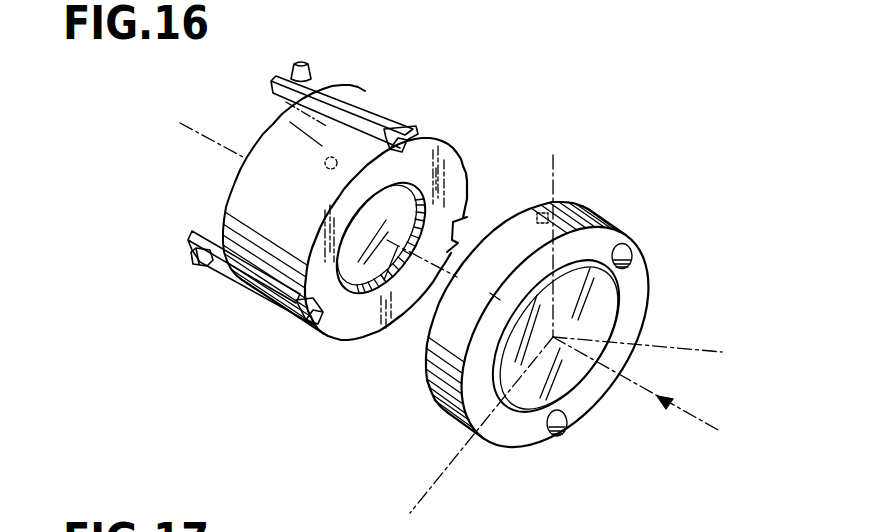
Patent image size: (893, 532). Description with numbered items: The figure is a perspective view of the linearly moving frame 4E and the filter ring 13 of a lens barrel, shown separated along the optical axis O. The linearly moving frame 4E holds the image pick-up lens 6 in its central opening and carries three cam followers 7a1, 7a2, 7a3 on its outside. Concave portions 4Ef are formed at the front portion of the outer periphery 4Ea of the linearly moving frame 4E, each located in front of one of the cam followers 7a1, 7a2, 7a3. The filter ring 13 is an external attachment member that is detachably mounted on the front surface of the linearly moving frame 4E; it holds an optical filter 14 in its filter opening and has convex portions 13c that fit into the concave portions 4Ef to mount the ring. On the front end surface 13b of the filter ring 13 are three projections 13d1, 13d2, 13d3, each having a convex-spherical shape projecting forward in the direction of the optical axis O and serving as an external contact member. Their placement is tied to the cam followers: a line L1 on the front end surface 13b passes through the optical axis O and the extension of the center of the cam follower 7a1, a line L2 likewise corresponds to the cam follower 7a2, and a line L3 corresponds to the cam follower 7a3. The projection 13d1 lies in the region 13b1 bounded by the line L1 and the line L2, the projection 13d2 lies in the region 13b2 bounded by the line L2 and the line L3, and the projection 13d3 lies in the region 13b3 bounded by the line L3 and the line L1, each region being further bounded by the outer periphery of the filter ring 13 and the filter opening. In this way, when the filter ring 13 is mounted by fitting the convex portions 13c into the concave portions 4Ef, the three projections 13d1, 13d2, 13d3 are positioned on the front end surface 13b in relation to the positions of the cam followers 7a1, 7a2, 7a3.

The linearly moving frame 4E is at (263, 184).
The image pick-up lens 6 is at (357, 294).
The outer periphery 4Ea is at (368, 108).
The concave portions 4Ef is at (404, 134).
The cam follower 7a1 is at (306, 60).
The cam follower 7a2 is at (338, 156).
The cam follower 7a3 is at (197, 266).
The filter ring 13 is at (600, 208).
The front end surface 13b is at (497, 425).
The region 13b1 is at (648, 300).
The region 13b2 is at (612, 402).
The region 13b3 is at (500, 294).
The convex portions 13c is at (543, 214).
The projection 13d1 is at (624, 256).
The projection 13d2 is at (566, 432).
The projection 13d3 is at (455, 372).
The optical filter 14 is at (520, 398).
The line L1 is at (553, 183).
The line L2 is at (673, 347).
The line L3 is at (445, 470).
The optical axis O is at (662, 394).